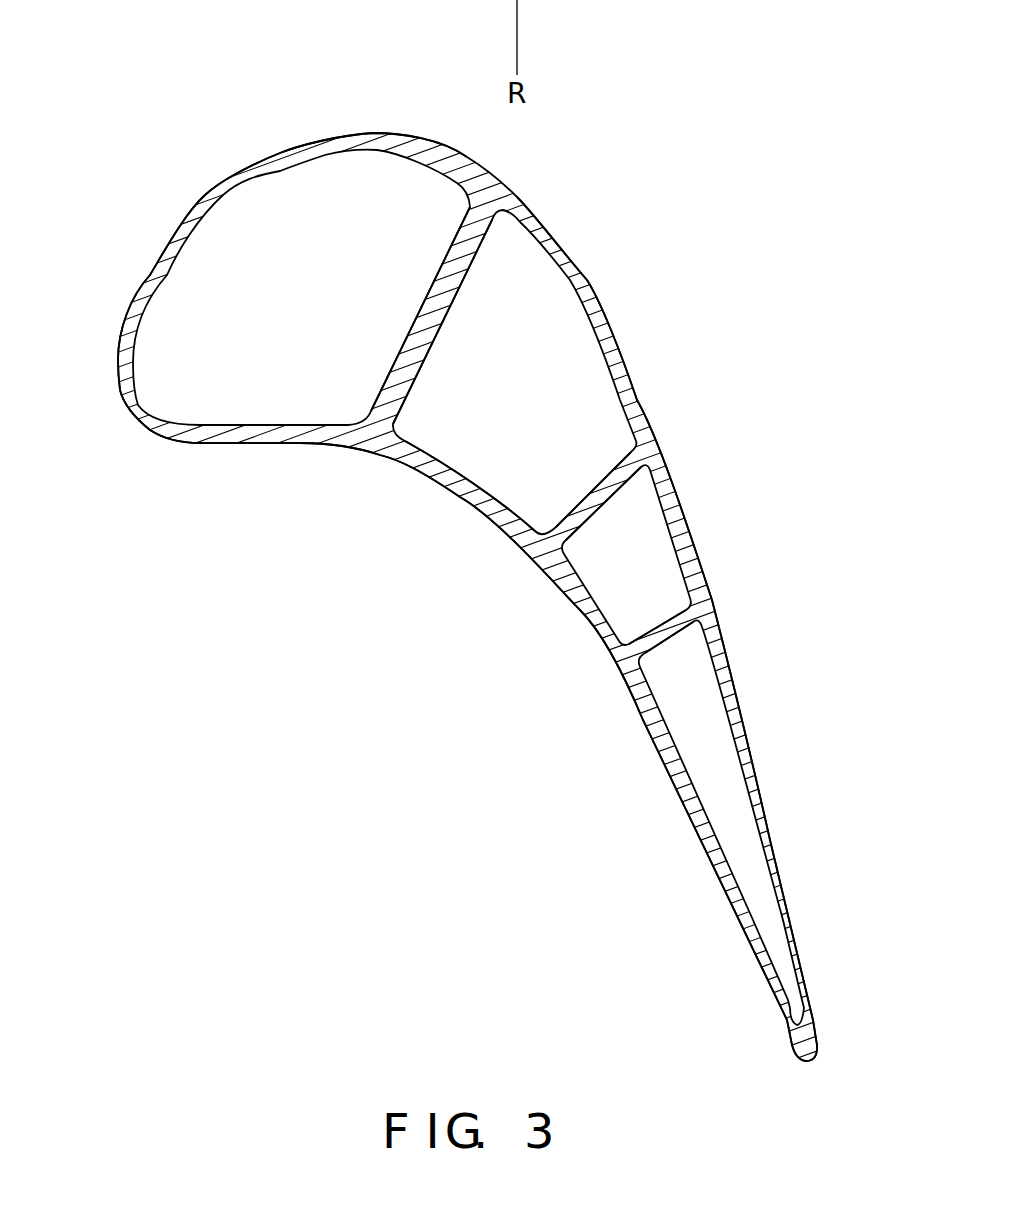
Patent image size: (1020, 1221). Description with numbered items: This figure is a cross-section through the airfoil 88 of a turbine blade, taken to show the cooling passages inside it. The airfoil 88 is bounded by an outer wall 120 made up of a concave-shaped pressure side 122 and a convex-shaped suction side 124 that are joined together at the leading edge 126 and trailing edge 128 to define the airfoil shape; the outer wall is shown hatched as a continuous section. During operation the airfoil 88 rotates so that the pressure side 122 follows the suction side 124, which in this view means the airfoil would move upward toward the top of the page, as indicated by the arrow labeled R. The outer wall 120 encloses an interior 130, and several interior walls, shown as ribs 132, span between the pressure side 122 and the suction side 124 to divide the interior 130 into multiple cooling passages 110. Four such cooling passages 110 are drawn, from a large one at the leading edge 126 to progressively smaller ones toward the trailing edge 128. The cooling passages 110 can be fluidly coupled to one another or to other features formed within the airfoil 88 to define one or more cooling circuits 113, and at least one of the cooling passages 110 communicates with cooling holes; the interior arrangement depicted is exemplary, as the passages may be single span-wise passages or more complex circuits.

The airfoil 88 is at (196, 145).
The cooling passages 110 is at (332, 304).
The cooling circuit 113 is at (419, 458).
The outer wall 120 is at (526, 170).
The pressure side 122 is at (528, 552).
The suction side 124 is at (620, 323).
The leading edge 126 is at (138, 425).
The trailing edge 128 is at (806, 1061).
The interior 130 is at (400, 166).
The ribs 132 is at (441, 315).